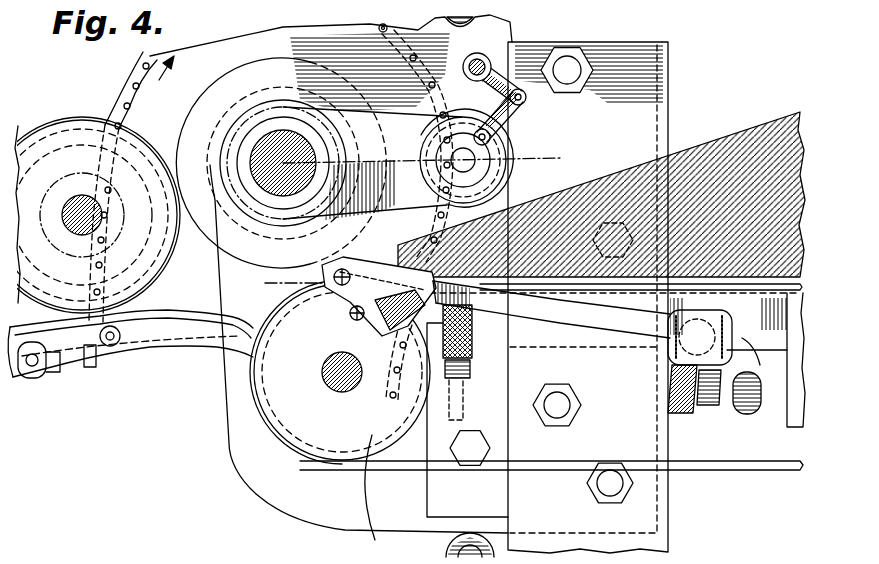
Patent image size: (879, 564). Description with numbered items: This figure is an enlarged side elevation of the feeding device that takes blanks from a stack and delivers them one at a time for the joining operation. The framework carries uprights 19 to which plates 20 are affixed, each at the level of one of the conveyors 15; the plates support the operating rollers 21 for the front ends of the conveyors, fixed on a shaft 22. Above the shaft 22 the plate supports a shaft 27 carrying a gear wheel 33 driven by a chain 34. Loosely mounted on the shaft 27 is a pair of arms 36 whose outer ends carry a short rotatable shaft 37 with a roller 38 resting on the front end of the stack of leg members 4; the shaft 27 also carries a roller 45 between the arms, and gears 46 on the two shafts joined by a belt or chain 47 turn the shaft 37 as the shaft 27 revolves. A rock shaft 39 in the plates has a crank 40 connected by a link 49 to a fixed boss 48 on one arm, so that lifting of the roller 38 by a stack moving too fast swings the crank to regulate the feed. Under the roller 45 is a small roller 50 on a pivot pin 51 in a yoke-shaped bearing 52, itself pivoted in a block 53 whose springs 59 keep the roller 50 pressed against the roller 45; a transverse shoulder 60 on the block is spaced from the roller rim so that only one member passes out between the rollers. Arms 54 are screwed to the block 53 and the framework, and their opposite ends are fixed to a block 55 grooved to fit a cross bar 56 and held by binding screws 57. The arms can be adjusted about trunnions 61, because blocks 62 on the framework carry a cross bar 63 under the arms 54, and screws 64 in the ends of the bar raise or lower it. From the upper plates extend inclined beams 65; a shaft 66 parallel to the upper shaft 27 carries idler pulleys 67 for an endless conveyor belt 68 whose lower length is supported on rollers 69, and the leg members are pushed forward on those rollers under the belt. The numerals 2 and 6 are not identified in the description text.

The frame plate 2 is at (772, 348).
The leg member 4 is at (757, 128).
The arm 6 is at (130, 351).
The conveyor 15 is at (787, 472).
The upright 19 is at (662, 540).
The plate 20 is at (328, 500).
The operating roller 21 is at (377, 497).
The shaft 22 is at (340, 390).
The shaft 27 is at (278, 200).
The gear wheel 33 is at (140, 106).
The chain 34 is at (90, 368).
The arm 36 is at (283, 60).
The short rotatable shaft 37 is at (475, 160).
The roller 38 is at (510, 138).
The rock shaft 39 is at (488, 58).
The crank 40 is at (512, 90).
The roller 45 is at (250, 68).
The gear 46 is at (323, 127).
The belt or chain 47 is at (347, 117).
The fixed boss 48 is at (245, 140).
The link 49 is at (483, 115).
The small roller 50 is at (333, 267).
The pivot pin 51 is at (341, 269).
The yoke-shaped bearing 52 is at (351, 316).
The block 53 is at (371, 326).
The arm 54 is at (553, 330).
The block 55 is at (709, 408).
The cross bar 56 is at (686, 415).
The binding screw 57 is at (748, 412).
The spring 59 is at (389, 350).
The transverse shoulder 60 is at (297, 284).
The trunnion 61 is at (700, 318).
The block 62 is at (433, 487).
The cross bar 63 is at (473, 348).
The screw 64 is at (470, 376).
The inclined beam 65 is at (54, 372).
The shaft 66 is at (74, 198).
The idler pulley 67 is at (72, 370).
The endless conveyor belt 68 is at (16, 130).
The roller 69 is at (30, 385).